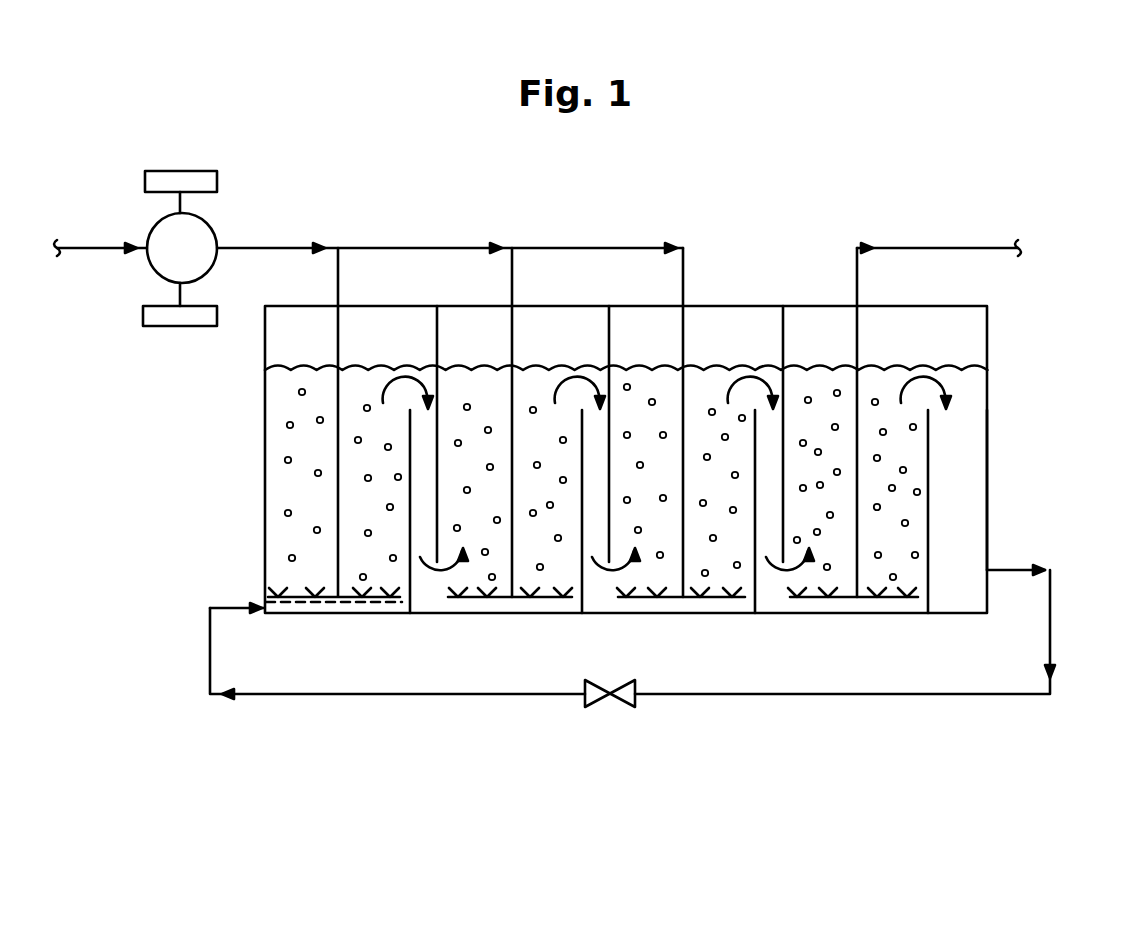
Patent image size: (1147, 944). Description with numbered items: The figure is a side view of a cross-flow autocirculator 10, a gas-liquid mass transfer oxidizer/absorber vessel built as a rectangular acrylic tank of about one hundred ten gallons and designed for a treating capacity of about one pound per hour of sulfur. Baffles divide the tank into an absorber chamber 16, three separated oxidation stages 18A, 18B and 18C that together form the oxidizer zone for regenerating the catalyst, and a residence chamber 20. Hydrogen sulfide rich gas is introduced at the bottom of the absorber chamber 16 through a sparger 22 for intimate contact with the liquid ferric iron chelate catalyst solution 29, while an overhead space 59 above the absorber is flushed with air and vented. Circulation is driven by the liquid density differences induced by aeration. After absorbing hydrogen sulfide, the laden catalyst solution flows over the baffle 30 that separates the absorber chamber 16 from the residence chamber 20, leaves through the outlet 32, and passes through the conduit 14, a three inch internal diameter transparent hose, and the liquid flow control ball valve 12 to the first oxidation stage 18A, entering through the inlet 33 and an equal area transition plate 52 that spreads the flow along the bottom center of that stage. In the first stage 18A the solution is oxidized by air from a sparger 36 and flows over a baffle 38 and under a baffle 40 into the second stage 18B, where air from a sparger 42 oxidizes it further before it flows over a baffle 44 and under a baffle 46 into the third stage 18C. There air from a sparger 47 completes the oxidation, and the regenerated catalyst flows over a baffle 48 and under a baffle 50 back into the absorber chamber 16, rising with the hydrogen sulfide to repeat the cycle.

The cross-flow autocirculator 10 is at (783, 227).
The liquid flow control ball valve 12 is at (615, 707).
The conduit 14 is at (982, 695).
The absorber chamber 16 is at (833, 327).
The first oxidation stage 18A is at (282, 337).
The second oxidation stage 18B is at (468, 322).
The third oxidation stage 18C is at (642, 323).
The residence chamber 20 is at (968, 497).
The sparger 22 is at (858, 387).
The liquid ferric iron chelate catalyst solution 29 is at (797, 390).
The baffle 30 is at (930, 448).
The outlet 32 is at (988, 568).
The inlet 33 is at (258, 600).
The sparger 36 is at (372, 597).
The baffle 38 is at (407, 424).
The baffle 40 is at (435, 330).
The sparger 42 is at (518, 597).
The baffle 44 is at (582, 425).
The baffle 46 is at (608, 323).
The sparger 47 is at (715, 598).
The baffle 48 is at (753, 440).
The baffle 50 is at (782, 333).
The equal area transition plate 52 is at (300, 602).
The overhead space 59 is at (975, 352).